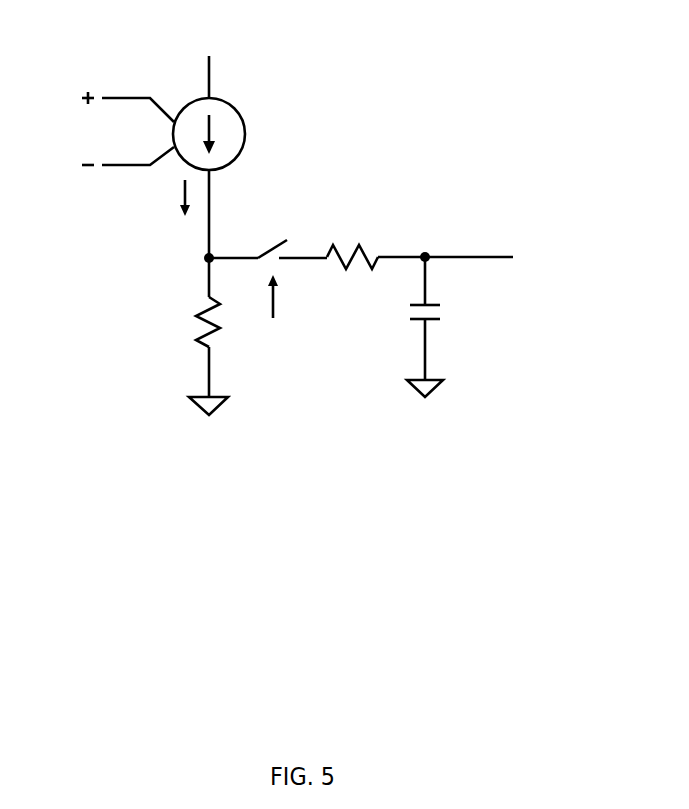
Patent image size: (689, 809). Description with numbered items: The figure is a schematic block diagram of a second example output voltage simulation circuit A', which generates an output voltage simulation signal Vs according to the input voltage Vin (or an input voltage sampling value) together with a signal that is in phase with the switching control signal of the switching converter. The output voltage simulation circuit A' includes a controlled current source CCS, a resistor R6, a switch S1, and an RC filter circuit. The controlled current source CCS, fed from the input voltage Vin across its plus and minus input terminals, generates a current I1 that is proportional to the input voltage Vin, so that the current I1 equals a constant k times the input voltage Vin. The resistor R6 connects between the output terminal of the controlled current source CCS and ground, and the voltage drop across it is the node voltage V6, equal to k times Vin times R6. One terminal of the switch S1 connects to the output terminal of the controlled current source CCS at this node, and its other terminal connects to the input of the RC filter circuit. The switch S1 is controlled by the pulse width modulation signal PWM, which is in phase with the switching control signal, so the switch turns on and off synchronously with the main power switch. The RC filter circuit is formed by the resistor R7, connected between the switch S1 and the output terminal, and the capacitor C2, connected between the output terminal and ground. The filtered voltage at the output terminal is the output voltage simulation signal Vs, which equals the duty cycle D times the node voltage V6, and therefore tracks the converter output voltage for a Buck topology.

The controlled current source CCS is at (235, 157).
The input voltage Vin is at (108, 128).
The current I1 is at (172, 198).
The voltage drop of resistor R6 V6 is at (183, 258).
The switch S1 is at (268, 234).
The pulse width modulation signal PWM is at (272, 314).
The resistor R6 is at (189, 336).
The resistor R7 is at (376, 274).
The capacitor C2 is at (442, 327).
The output voltage simulation signal Vs is at (485, 255).
The output voltage simulation circuit A' is at (407, 102).